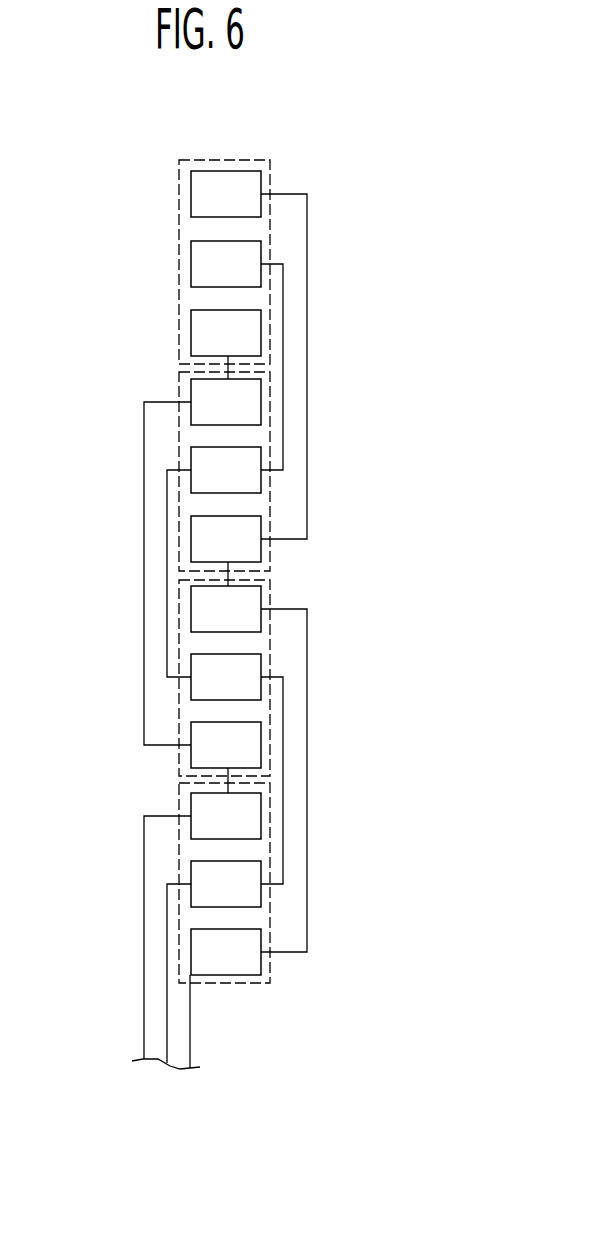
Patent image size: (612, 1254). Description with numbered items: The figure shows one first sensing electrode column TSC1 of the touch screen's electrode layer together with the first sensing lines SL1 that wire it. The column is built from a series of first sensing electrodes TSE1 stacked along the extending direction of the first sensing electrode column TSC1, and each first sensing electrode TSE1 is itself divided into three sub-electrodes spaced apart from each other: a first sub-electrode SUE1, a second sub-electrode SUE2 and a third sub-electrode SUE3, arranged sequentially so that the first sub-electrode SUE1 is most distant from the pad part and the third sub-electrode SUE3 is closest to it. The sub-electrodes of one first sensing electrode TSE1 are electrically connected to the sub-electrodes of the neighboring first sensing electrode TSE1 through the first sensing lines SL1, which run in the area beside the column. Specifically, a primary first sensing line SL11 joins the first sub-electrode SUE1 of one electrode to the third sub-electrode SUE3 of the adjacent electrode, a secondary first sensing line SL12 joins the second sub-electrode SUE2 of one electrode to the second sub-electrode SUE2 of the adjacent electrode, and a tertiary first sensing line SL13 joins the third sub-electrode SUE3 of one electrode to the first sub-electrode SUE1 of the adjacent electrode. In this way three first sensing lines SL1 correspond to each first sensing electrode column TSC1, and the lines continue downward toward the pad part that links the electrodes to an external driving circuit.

The first sensing electrode column TSC1 is at (382, 134).
The first sensing electrode TSE1 is at (97, 187).
The first sub-electrode SUE1 is at (191, 193).
The second sub-electrode SUE2 is at (191, 257).
The third sub-electrode SUE3 is at (191, 326).
The first sensing line SL1 is at (392, 226).
The primary first sensing line SL11 is at (307, 233).
The secondary first sensing line SL12 is at (283, 297).
The tertiary first sensing line SL13 is at (230, 357).